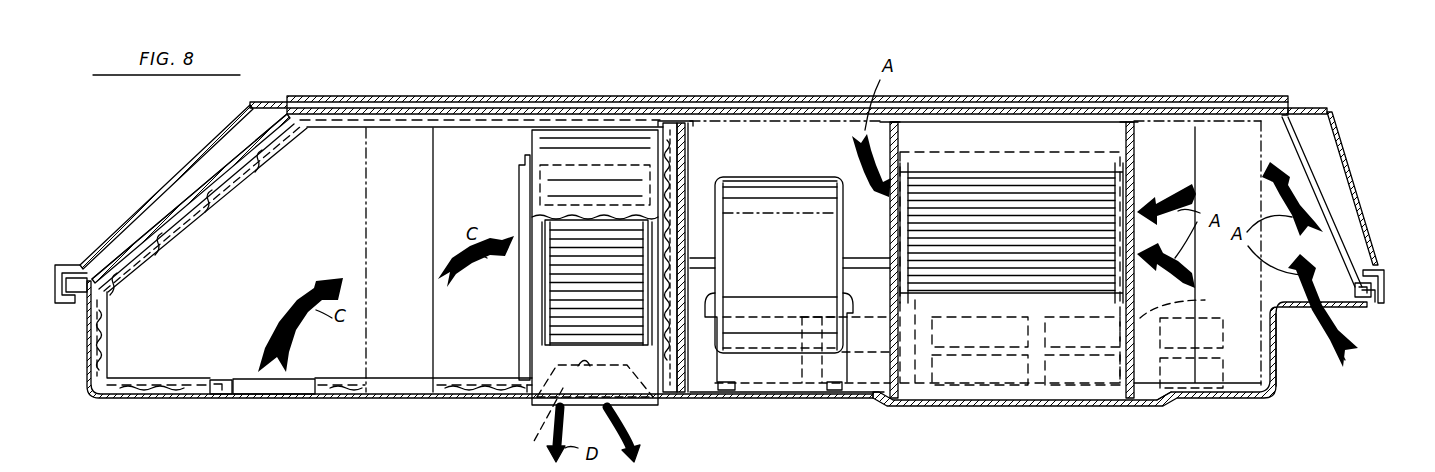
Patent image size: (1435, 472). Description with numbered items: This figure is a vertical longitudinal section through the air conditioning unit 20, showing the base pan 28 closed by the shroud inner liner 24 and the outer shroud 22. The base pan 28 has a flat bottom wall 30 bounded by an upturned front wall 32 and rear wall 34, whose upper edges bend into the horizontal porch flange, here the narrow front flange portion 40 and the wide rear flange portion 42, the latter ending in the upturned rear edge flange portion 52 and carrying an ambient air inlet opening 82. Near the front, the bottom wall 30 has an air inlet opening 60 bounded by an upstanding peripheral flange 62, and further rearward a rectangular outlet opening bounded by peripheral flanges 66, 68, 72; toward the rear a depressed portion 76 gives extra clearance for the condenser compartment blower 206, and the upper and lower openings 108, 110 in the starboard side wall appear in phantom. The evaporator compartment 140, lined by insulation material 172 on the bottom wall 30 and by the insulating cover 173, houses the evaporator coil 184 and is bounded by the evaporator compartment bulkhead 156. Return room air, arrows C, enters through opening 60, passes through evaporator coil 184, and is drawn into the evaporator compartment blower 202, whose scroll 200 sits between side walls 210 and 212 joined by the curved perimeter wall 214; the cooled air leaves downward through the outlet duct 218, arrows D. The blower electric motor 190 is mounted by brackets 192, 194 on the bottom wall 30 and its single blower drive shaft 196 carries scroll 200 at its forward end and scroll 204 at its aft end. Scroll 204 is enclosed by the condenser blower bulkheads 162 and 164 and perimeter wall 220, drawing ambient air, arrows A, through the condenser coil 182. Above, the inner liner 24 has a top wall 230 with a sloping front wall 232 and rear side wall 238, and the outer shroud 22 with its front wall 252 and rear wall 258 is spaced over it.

The air conditioning unit 20 is at (372, 88).
The outer shroud 22 is at (184, 150).
The shroud inner liner 24 is at (214, 205).
The base pan 28 is at (150, 405).
The bottom wall 30 is at (760, 400).
The front wall 32 is at (85, 365).
The rear wall 34 is at (1278, 352).
The front flange portion 40 is at (75, 308).
The rear flange portion 42 is at (1370, 307).
The rear edge flange portion 52 is at (1380, 270).
The air inlet opening 60 is at (262, 400).
The upstanding peripheral flange 62 is at (218, 408).
The peripheral flange 66 is at (534, 424).
The peripheral flange 68 is at (676, 124).
The peripheral flange 72 is at (526, 384).
The depressed portion 76 is at (1000, 407).
The rectangular opening 82 is at (1340, 325).
The upper openings 108 is at (1200, 308).
The lower openings 110 is at (1180, 400).
The evaporator compartment 140 is at (487, 167).
The evaporator compartment bulkhead 156 is at (690, 145).
The condenser blower bulkhead 162 is at (890, 225).
The condenser blower bulkhead 164 is at (1131, 130).
The insulation material 172 is at (98, 345).
The cover 173 is at (367, 133).
The condenser coil 182 is at (1215, 140).
The evaporator coil 184 is at (352, 243).
The blower electric motor 190 is at (779, 172).
The bracket 192 is at (846, 300).
The bracket 194 is at (705, 300).
The blower drive shaft 196 is at (840, 254).
The scroll 200 is at (580, 285).
The evaporator compartment blower 202 is at (622, 130).
The scroll 204 is at (1002, 290).
The condenser compartment blower 206 is at (1053, 140).
The side wall 210 is at (520, 318).
The side wall 212 is at (680, 195).
The curved perimeter wall 214 is at (548, 222).
The outlet duct 218 is at (540, 410).
The perimeter wall 220 is at (975, 135).
The top wall 230 is at (515, 106).
The front wall 232 is at (262, 166).
The rear side wall 238 is at (1300, 168).
The front wall 252 is at (153, 195).
The rear wall 258 is at (1355, 220).